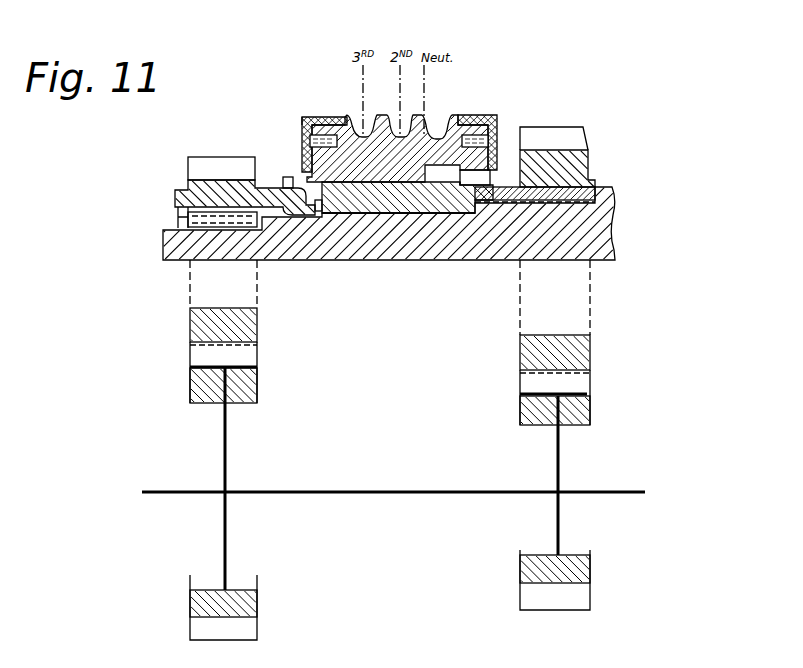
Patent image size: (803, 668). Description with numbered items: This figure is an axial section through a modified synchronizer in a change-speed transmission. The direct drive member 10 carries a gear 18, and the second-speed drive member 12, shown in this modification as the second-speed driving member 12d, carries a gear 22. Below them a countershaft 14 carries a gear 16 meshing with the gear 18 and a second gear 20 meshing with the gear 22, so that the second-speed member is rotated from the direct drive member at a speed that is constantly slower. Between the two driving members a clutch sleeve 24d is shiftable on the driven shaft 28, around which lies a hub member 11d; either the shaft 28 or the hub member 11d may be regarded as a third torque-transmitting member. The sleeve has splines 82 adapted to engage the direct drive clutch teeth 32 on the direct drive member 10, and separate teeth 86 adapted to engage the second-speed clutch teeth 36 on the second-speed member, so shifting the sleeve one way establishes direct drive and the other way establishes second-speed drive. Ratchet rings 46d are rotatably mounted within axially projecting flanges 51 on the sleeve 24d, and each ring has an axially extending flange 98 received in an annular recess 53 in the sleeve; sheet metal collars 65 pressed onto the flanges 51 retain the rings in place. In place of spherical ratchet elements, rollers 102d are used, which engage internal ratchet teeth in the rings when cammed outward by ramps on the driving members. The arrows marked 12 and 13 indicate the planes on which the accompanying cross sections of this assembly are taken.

The direct drive member 10 is at (177, 202).
The hub member 11d is at (390, 180).
The second-speed drive member 12 is at (315, 105).
The second-speed driving member 12d is at (587, 163).
The section line 13- 13 is at (462, 113).
The countershaft 14 is at (387, 490).
The gear 16 is at (200, 380).
The gear 18 is at (190, 158).
The second gear 20 is at (590, 405).
The gear 22 is at (587, 127).
The clutch sleeve 24d is at (425, 175).
The driven shaft 28 is at (620, 223).
The clutch teeth 32 is at (290, 177).
The clutch teeth 36 is at (465, 185).
The ratchet rings 46d is at (303, 158).
The axially projecting flanges 51 is at (480, 127).
The annular recesses 53 is at (465, 103).
The sheet metal collars 65 is at (303, 115).
The splines 82 is at (362, 200).
The separate teeth 86 is at (473, 172).
The axially extending flange 98 is at (325, 115).
The rollers 102d is at (303, 140).